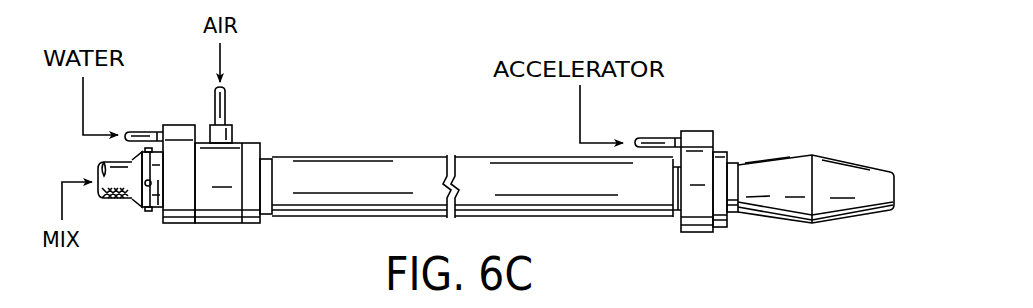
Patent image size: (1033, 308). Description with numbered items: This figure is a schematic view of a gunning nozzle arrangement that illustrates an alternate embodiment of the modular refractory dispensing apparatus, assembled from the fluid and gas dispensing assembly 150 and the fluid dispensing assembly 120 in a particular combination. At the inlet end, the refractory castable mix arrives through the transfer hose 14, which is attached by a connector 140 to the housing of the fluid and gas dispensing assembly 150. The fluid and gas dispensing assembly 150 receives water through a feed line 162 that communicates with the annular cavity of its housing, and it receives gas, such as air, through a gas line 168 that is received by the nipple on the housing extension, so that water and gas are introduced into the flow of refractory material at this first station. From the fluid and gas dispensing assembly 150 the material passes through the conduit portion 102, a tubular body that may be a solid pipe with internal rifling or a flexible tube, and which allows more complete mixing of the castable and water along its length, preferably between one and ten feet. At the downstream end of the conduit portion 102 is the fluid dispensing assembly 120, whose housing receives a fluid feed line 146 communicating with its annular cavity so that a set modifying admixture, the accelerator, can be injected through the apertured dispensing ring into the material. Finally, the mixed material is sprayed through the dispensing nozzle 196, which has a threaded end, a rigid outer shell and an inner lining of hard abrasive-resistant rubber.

The transfer hose 14 is at (112, 203).
The connector 140 is at (140, 211).
The fluid and gas dispensing assembly 150 is at (223, 228).
The feed line 162 is at (138, 133).
The gas line 168 is at (222, 103).
The conduit portion 102 is at (380, 157).
The fluid feed line 146 is at (655, 140).
The fluid dispensing assembly 120 is at (721, 129).
The dispensing nozzle 196 is at (840, 160).